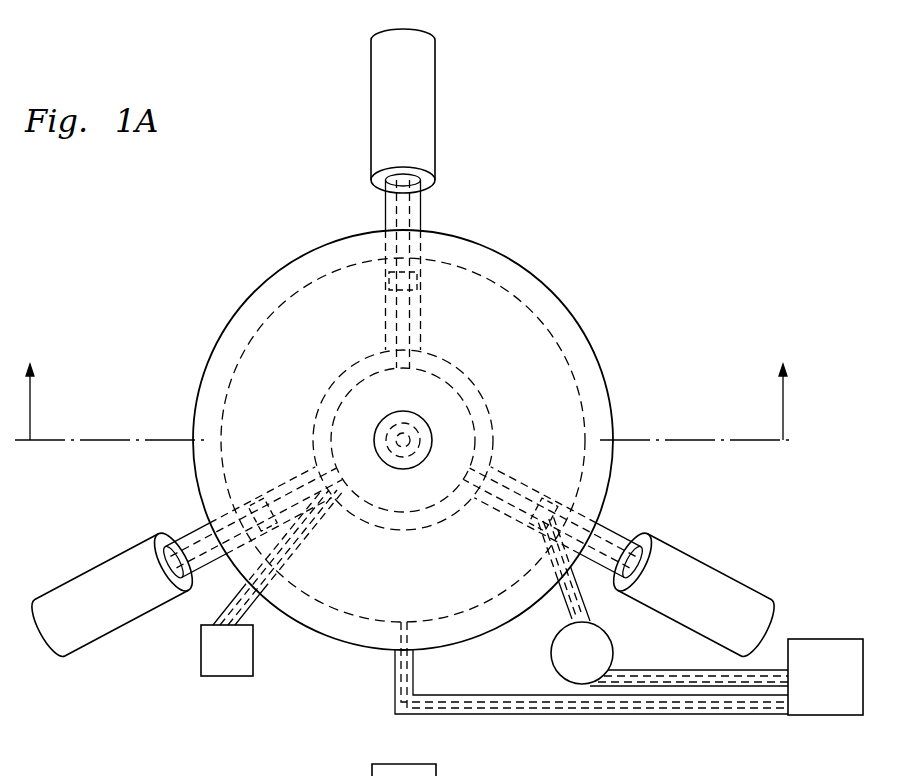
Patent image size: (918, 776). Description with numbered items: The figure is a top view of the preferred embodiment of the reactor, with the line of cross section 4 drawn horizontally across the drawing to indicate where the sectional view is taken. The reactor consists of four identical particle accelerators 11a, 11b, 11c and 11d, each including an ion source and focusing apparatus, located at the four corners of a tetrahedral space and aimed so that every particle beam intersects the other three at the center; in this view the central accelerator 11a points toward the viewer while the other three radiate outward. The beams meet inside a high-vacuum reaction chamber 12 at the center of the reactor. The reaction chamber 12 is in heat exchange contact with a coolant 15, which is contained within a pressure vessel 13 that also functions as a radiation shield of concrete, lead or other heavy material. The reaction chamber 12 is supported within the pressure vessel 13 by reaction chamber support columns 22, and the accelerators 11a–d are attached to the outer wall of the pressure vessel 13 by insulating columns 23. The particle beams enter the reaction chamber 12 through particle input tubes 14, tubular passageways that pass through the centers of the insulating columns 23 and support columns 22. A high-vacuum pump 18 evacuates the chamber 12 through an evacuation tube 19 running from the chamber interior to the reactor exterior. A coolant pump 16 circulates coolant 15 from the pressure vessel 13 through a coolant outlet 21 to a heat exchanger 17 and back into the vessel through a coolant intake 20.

The line of cross section 4 is at (405, 388).
The particle accelerator 11a is at (432, 430).
The particle accelerator 11b is at (127, 550).
The particle accelerator 11c is at (700, 567).
The particle accelerator 11d is at (371, 117).
The reaction chamber 12 is at (467, 373).
The pressure vessel 13 is at (540, 276).
The particle input tube 14 is at (400, 273).
The coolant 15 is at (280, 353).
The coolant pump 16 is at (551, 653).
The heat exchanger 17 is at (808, 639).
The high-vacuum pump 18 is at (200, 650).
The evacuation tube 19 is at (317, 537).
The coolant intake 20 is at (413, 677).
The coolant outlet 21 is at (687, 670).
The reaction chamber support column 22 is at (423, 323).
The insulating column 23 is at (422, 213).